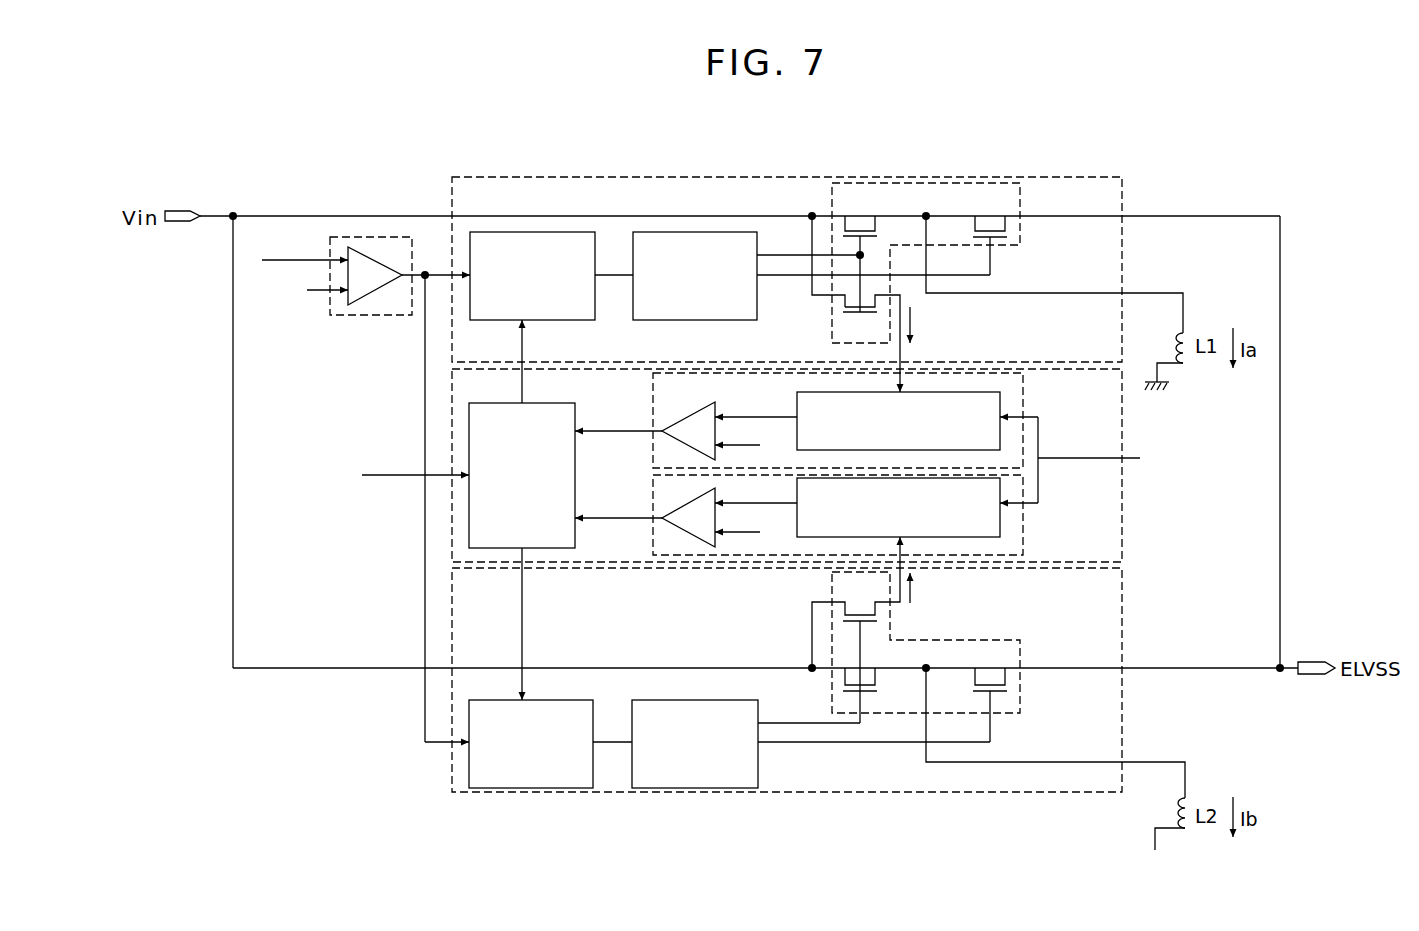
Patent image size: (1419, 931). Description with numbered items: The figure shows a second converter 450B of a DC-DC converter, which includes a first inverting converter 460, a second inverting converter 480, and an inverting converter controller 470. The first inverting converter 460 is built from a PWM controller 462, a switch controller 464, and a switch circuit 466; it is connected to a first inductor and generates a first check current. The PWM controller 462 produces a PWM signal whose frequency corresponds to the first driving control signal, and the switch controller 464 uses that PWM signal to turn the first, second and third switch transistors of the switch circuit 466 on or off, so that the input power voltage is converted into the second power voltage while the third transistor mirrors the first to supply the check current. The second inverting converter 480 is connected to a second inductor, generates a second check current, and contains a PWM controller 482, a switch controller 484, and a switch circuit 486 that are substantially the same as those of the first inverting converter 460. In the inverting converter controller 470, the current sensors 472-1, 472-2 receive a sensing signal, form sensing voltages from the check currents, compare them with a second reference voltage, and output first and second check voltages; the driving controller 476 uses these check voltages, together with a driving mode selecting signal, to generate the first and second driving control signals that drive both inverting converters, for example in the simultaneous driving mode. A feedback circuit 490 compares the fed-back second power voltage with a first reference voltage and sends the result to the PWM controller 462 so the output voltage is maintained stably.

The second converter 450B is at (817, 162).
The first inverting converter 460 is at (1122, 250).
The PWM controller 462 is at (525, 232).
The switch controller 464 is at (685, 232).
The switch circuit 466 is at (1022, 243).
The inverting converter controller 470 is at (1122, 497).
The current sensor 472-1 is at (1025, 400).
The current sensor 472-2 is at (1025, 530).
The driving controller 476 is at (469, 519).
The second inverting converter 480 is at (1122, 618).
The PWM controller 482 is at (525, 788).
The switch controller 484 is at (688, 788).
The switch circuit 486 is at (1022, 697).
The feedback circuit 490 is at (370, 315).